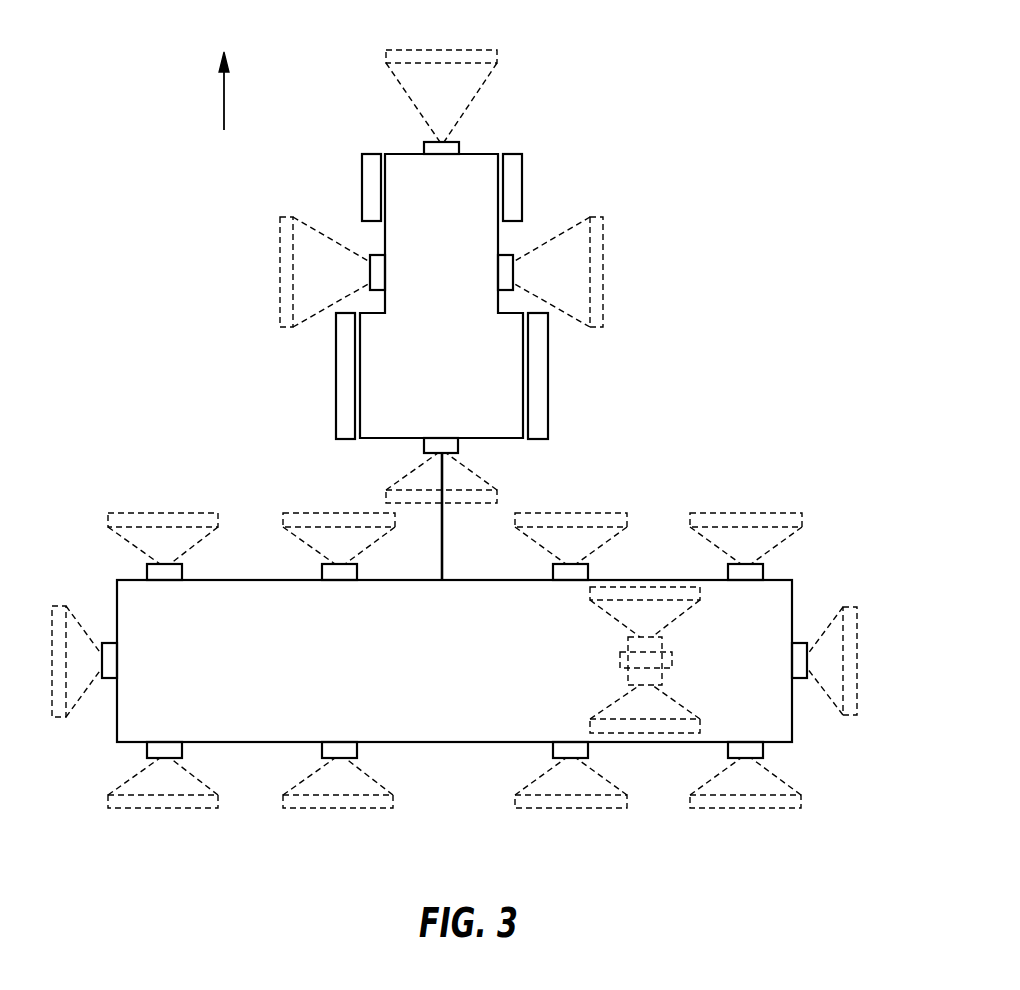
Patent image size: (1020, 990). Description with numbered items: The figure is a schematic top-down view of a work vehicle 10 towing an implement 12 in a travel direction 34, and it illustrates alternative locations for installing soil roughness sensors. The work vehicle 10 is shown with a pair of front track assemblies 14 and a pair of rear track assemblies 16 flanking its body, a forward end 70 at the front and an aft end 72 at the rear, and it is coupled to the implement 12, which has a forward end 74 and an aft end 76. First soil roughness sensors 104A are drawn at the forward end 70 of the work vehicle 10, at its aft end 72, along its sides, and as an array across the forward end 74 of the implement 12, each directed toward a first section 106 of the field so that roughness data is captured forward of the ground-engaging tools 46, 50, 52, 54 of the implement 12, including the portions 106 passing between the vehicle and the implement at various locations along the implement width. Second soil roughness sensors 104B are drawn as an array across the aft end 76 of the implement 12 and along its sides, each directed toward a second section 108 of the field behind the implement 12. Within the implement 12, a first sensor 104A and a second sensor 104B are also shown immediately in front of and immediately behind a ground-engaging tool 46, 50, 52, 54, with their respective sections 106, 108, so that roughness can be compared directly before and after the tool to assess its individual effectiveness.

The work vehicle 10 is at (453, 347).
The implement 12 is at (466, 674).
The front track assemblies 14 is at (362, 190).
The rear track assemblies 16 is at (340, 378).
The travel direction 34 is at (224, 90).
The ground-engaging tool 46 is at (611, 660).
The ground-engaging tool 50 is at (611, 660).
The ground-engaging tool 52 is at (611, 660).
The ground-engaging tool 54 is at (742, 712).
The forward end of the work vehicle 70 is at (473, 154).
The aft end of the work vehicle 72 is at (488, 440).
The forward end of the implement 74 is at (464, 580).
The aft end of the implement 76 is at (430, 743).
The first soil roughness sensor 104A is at (424, 150).
The second soil roughness sensor 104B is at (370, 255).
The first section of the field 106 is at (482, 50).
The second section of the field 108 is at (158, 808).